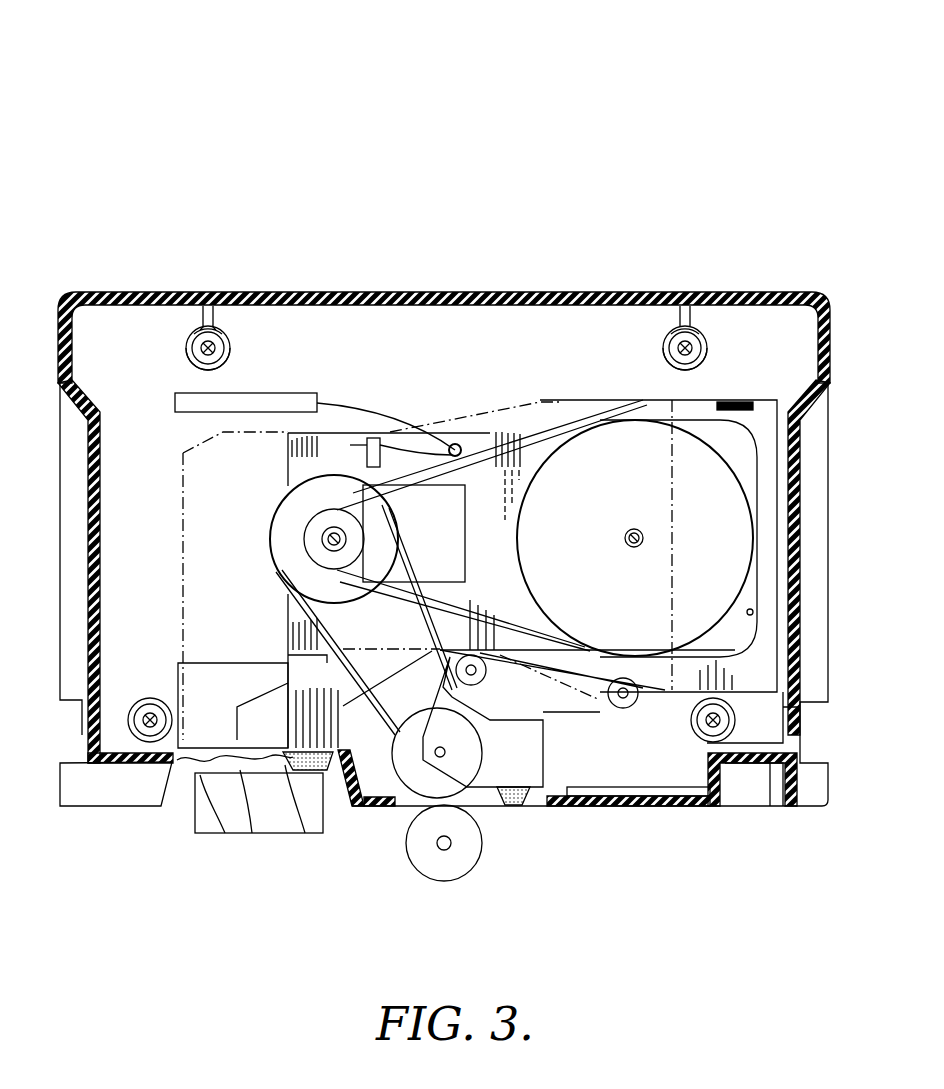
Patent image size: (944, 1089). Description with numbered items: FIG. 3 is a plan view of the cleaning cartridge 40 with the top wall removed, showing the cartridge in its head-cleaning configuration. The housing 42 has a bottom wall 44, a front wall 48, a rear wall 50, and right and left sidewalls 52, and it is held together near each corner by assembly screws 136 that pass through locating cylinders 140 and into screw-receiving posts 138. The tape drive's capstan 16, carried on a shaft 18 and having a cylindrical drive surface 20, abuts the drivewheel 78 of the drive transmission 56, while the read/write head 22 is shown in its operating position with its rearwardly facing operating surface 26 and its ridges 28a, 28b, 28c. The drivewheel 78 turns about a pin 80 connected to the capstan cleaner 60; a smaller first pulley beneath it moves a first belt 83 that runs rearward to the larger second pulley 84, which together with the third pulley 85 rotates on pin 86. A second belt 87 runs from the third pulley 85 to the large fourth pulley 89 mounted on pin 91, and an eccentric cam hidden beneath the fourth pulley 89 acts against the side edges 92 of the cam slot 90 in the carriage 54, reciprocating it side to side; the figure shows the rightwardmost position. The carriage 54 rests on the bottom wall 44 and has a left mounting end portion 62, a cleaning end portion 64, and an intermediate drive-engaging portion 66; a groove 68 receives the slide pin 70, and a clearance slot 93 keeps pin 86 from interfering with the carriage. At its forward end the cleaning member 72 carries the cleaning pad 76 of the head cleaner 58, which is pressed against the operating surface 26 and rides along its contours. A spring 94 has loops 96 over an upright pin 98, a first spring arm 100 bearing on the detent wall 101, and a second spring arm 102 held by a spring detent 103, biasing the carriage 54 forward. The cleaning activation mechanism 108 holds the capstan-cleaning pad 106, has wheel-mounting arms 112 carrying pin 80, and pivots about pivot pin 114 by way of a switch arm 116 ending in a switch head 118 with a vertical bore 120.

The capstan 16 is at (463, 858).
The shaft 18 is at (444, 845).
The cylindrical drive surface 20 is at (406, 858).
The read/write head 22 is at (230, 818).
The operating surface 26 is at (283, 752).
The ridge 28a is at (168, 800).
The ridge 28b is at (198, 830).
The ridge 28c is at (302, 820).
The cleaning cartridge 40 is at (120, 163).
The housing 42 is at (469, 286).
The bottom wall 44 is at (600, 357).
The front wall 48 is at (372, 808).
The rear wall 50 is at (300, 298).
The sidewalls 52 is at (90, 518).
The carriage 54 is at (487, 450).
The drive transmission 56 is at (243, 511).
The head cleaner 58 is at (341, 820).
The capstan cleaner 60 is at (292, 825).
The left mounting end portion 62 is at (758, 663).
The cleaning end portion 64 is at (303, 637).
The intermediate drive-engaging portion 66 is at (693, 403).
The groove 68 is at (800, 673).
The pivot pin 70 is at (800, 707).
The cleaning member 72 is at (300, 690).
The cleaning pad 76 is at (336, 805).
The drivewheel 78 is at (418, 757).
The pin 80 is at (446, 753).
The first belt 83 is at (303, 619).
The second pulley 84 is at (282, 540).
The third pulley 85 is at (312, 548).
The pin 86 is at (320, 535).
The second belt 87 is at (538, 462).
The fourth pulley 89 is at (716, 490).
The cam slot 90 is at (755, 448).
The pin 91 is at (634, 535).
The side edges 92 is at (752, 613).
The clearance slot 93 is at (468, 548).
The spring 94 is at (338, 398).
The loops 96 is at (432, 430).
The pin 98 is at (458, 446).
The first spring arm 100 is at (362, 405).
The detent wall 101 is at (288, 398).
The second spring arm 102 is at (426, 456).
The spring detent 103 is at (373, 440).
The capstan-cleaning pad 106 is at (513, 808).
The cleaning activation mechanism 108 is at (552, 742).
The wheel-mounting arms 112 is at (505, 745).
The pivot pin 114 is at (485, 678).
The switch arm 116 is at (582, 707).
The switch head 118 is at (626, 710).
The vertical bore 120 is at (632, 702).
The assembly screws 136 is at (228, 352).
The screw-receiving posts 138 is at (208, 335).
The locating cylinders 140 is at (203, 343).